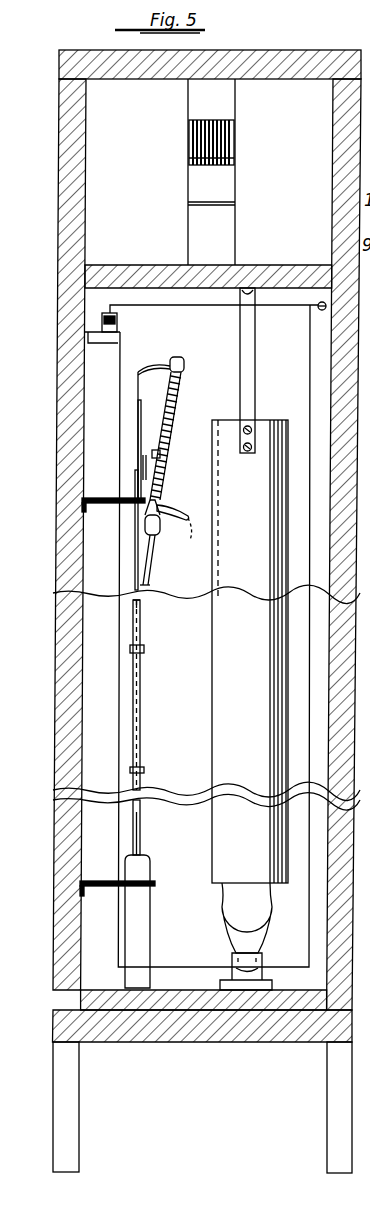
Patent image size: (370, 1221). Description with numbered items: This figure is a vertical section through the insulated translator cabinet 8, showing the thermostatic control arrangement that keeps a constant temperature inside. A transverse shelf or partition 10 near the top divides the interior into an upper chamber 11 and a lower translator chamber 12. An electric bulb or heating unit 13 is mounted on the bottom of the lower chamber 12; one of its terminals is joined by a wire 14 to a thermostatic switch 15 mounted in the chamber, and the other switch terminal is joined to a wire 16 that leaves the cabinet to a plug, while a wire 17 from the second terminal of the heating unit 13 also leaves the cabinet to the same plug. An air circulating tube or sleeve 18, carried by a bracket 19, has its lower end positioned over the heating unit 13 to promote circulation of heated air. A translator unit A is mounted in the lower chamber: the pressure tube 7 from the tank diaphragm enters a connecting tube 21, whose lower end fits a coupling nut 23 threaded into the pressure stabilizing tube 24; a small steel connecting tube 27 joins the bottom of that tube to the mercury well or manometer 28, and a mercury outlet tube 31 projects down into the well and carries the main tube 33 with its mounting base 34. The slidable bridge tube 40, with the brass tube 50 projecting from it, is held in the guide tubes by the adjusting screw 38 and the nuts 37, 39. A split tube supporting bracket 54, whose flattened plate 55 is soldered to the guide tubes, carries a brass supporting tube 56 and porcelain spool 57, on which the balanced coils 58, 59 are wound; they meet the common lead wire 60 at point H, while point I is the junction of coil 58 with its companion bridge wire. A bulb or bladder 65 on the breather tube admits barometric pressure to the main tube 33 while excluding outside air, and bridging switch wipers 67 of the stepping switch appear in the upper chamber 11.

The translator cabinet 8 is at (70, 200).
The upper chamber 11 is at (108, 125).
The transverse shelf or partition 10 is at (152, 265).
The bulb or bladder 65 is at (198, 106).
The bridging switch wipers 67 is at (215, 143).
The wire 16 is at (174, 306).
The thermostatic switch 15 is at (117, 318).
The wire 17 is at (305, 932).
The bracket 19 is at (250, 372).
The air circulating tube or sleeve 18 is at (246, 709).
The electric bulb or heating unit 13 is at (235, 912).
The lower translator chamber 12 is at (95, 432).
The brass tube 50 is at (138, 388).
The tube 40 is at (138, 410).
The main tube 33 is at (133, 545).
The balanced coil 58 is at (152, 368).
The balanced coil 59 is at (174, 358).
The porcelain spool 57 is at (185, 362).
The junction of bridge wires 58 and 44 I is at (136, 372).
The upper nut 39 is at (140, 452).
The adjusting screw 38 is at (170, 456).
The nut 37 is at (158, 470).
The junction point of bridge wires 58, 59 and lead wire 60 H is at (188, 512).
The common lead wire 60 is at (190, 520).
The brass supporting tube 56 is at (158, 540).
The split tube supporting bracket 54 is at (150, 560).
The plate 55 is at (145, 586).
The connecting tube 21 is at (142, 612).
The pressure tube 7 is at (135, 600).
The pressure stabilizing tube or pipe 24 is at (142, 705).
The translator unit A is at (151, 632).
The coupling nut 23 is at (148, 658).
The mounting base 34 is at (145, 770).
The wire 14 is at (118, 712).
The connecting tube 27 is at (142, 838).
The mercury outlet pipe or tube 31 is at (142, 822).
The mercury well or manometer 28 is at (140, 912).